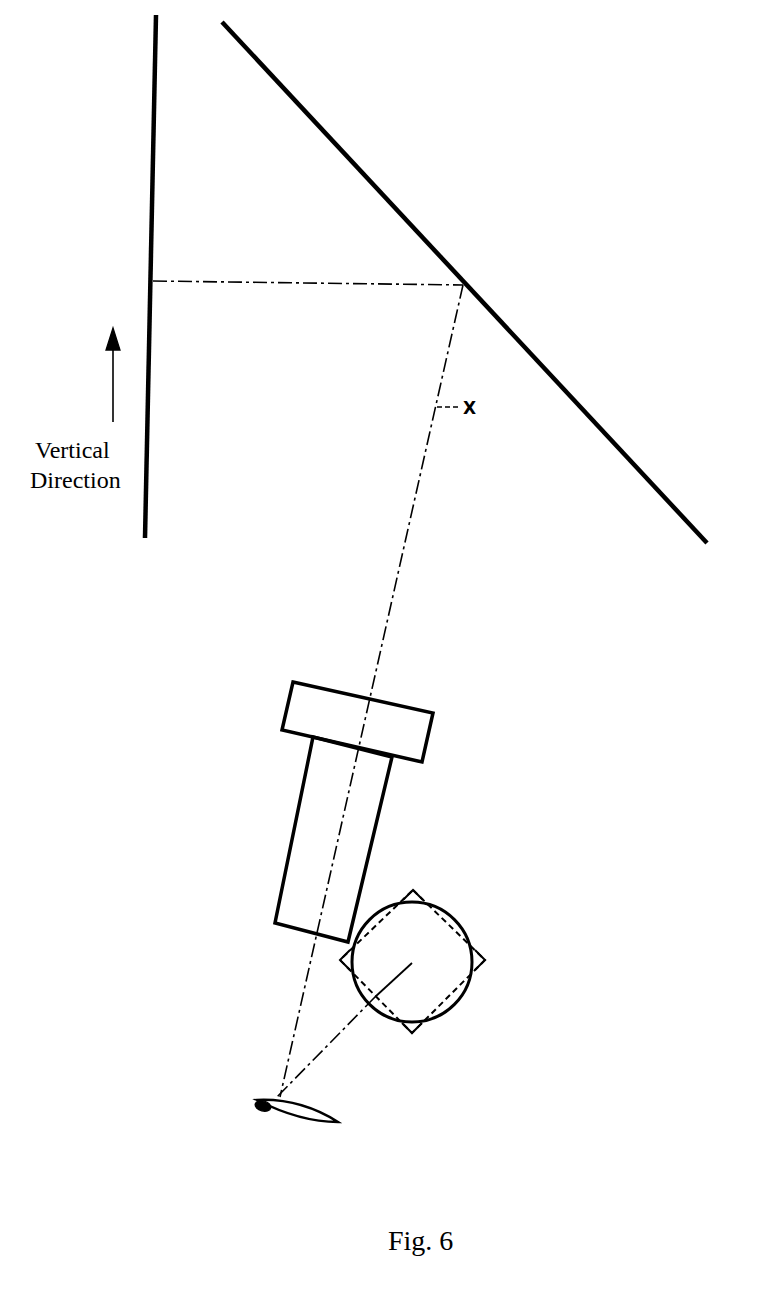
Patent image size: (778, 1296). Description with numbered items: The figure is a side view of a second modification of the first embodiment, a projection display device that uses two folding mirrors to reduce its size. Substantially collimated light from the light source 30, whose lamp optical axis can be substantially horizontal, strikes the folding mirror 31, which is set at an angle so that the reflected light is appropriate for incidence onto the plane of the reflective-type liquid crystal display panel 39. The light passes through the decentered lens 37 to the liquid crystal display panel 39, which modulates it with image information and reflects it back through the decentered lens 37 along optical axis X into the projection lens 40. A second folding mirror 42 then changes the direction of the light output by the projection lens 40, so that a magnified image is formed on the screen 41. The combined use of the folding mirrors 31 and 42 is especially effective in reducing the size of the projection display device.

The light source 30 is at (443, 1017).
The folding mirror 31 is at (467, 993).
The decentered lens 37 is at (317, 1102).
The reflective-type liquid crystal display panel 39 is at (277, 1112).
The projection lens 40 is at (292, 843).
The screen 41 is at (153, 62).
The folding mirror 42 is at (350, 157).